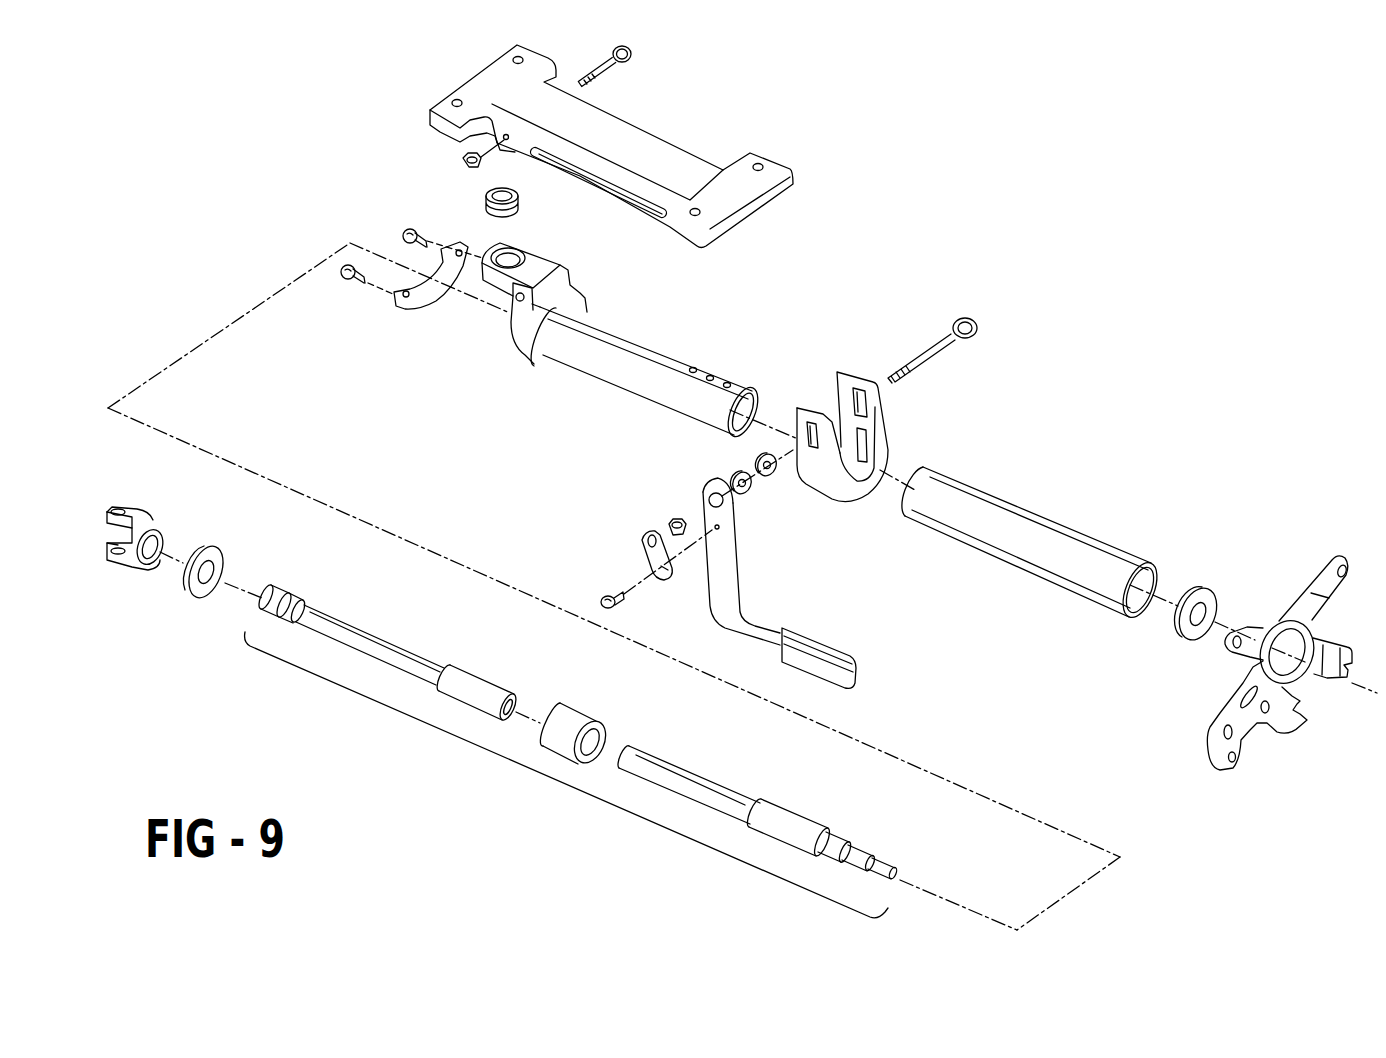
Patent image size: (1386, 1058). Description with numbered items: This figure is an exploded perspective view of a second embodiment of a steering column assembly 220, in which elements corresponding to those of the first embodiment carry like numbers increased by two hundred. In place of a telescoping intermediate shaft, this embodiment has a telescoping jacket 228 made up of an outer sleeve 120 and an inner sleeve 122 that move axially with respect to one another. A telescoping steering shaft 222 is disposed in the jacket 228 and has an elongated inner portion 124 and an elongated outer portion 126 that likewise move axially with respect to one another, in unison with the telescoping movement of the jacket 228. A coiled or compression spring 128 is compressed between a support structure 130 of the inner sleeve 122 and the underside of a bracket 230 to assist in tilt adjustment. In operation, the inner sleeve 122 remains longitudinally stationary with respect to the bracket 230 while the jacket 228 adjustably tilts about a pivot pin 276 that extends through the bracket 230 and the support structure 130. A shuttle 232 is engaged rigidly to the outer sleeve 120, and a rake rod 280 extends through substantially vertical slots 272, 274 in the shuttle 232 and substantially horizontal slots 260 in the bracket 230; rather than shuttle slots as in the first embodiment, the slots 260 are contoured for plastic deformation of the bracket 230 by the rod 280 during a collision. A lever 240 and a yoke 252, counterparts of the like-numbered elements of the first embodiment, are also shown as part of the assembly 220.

The outer sleeve 120 is at (1033, 506).
The inner sleeve 122 is at (675, 347).
The elongated inner portion 124 is at (392, 637).
The elongated outer portion 126 is at (693, 768).
The compression spring 128 is at (473, 201).
The support structure 130 is at (520, 300).
The steering column assembly 220 is at (1174, 210).
The telescoping steering shaft 222 is at (401, 716).
The telescoping jacket 228 is at (990, 478).
The bracket 230 is at (716, 136).
The shuttle 232 is at (842, 352).
The lever 240 is at (766, 572).
The yoke 252 is at (110, 580).
The horizontal slots 260 is at (602, 190).
The vertical slot 272 is at (807, 433).
The vertical slot 274 is at (855, 401).
The pivot pin 276 is at (607, 78).
The rake rod 280 is at (978, 312).